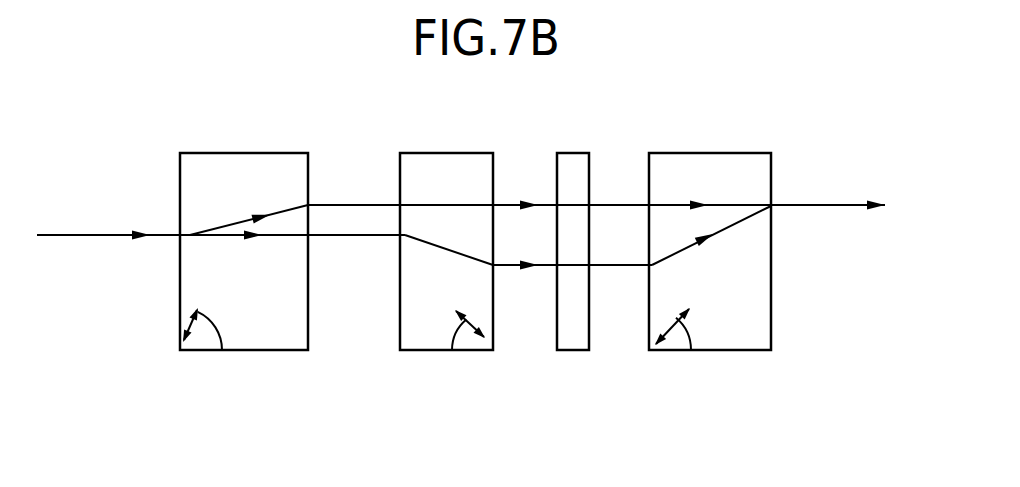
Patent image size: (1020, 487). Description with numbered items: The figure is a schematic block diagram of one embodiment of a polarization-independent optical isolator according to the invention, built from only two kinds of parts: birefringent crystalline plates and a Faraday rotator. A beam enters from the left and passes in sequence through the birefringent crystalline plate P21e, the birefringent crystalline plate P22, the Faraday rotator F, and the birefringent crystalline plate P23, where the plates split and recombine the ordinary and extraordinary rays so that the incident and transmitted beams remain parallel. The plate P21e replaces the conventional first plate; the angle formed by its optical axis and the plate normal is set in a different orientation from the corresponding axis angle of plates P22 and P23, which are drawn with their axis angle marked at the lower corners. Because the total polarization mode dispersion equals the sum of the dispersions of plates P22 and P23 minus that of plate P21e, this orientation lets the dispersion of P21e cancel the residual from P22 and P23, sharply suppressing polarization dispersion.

The birefringent crystalline plate P21e is at (244, 235).
The birefringent crystalline plate P22 is at (446, 235).
The Faraday rotator F is at (573, 235).
The birefringent crystalline plate P23 is at (710, 235).